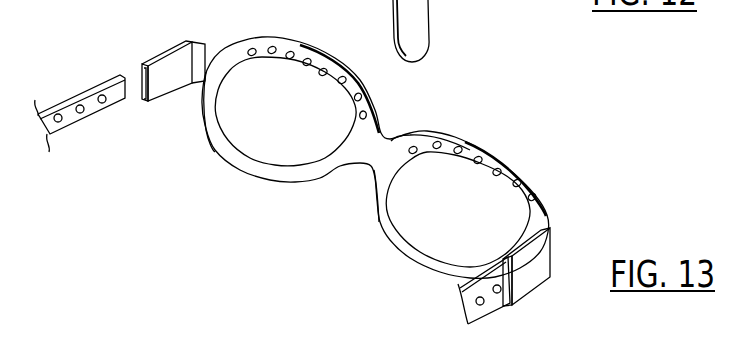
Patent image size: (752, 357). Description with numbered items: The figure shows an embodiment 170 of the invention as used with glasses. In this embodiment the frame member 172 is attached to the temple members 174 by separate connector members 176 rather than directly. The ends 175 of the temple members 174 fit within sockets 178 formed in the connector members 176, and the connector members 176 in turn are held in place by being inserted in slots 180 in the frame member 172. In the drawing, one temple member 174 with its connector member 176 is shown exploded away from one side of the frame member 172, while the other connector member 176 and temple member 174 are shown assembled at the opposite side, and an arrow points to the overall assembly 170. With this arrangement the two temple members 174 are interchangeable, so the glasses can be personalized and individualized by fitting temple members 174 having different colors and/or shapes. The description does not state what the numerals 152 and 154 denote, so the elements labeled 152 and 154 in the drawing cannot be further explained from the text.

In FIG. 12, the nose piece 152 is at (462, 0).
In FIG. 13, the lens opening 154 is at (458, 209).
In FIG. 13, the embodiment 170 is at (323, 140).
In FIG. 13, the frame member 172 is at (387, 140).
In FIG. 13, the temple members 174 is at (272, 191).
In FIG. 13, the ends 175 is at (113, 93).
In FIG. 13, the connector members 176 is at (173, 65).
In FIG. 13, the sockets 178 is at (137, 100).
In FIG. 13, the slots 180 is at (228, 50).